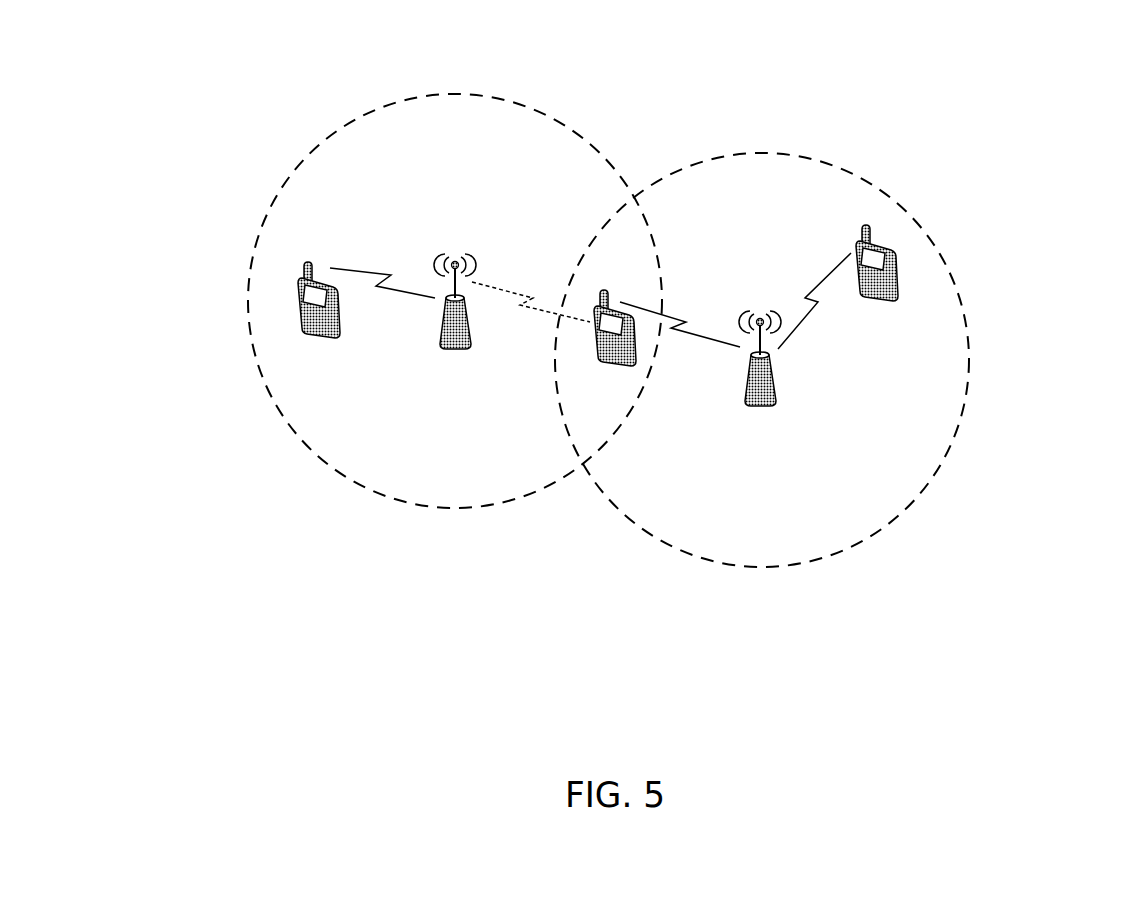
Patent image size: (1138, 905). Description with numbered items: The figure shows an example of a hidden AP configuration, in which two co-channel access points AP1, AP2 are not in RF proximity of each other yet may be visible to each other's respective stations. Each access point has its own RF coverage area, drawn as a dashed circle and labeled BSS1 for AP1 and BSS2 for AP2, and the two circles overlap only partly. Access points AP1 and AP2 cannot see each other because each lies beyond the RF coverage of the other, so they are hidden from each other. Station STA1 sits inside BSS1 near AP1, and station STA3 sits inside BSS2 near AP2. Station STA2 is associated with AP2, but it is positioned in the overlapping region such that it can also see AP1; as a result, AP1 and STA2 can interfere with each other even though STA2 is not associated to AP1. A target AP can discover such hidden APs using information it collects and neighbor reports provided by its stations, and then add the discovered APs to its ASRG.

The first basic service set (RF coverage of AP1) BSS1 is at (457, 50).
The second basic service set (RF coverage of AP2) BSS2 is at (762, 612).
The first station STA1 is at (280, 289).
The station STA2 is at (607, 376).
The third station STA3 is at (903, 281).
The access point AP1 is at (459, 321).
The access point AP2 is at (761, 379).